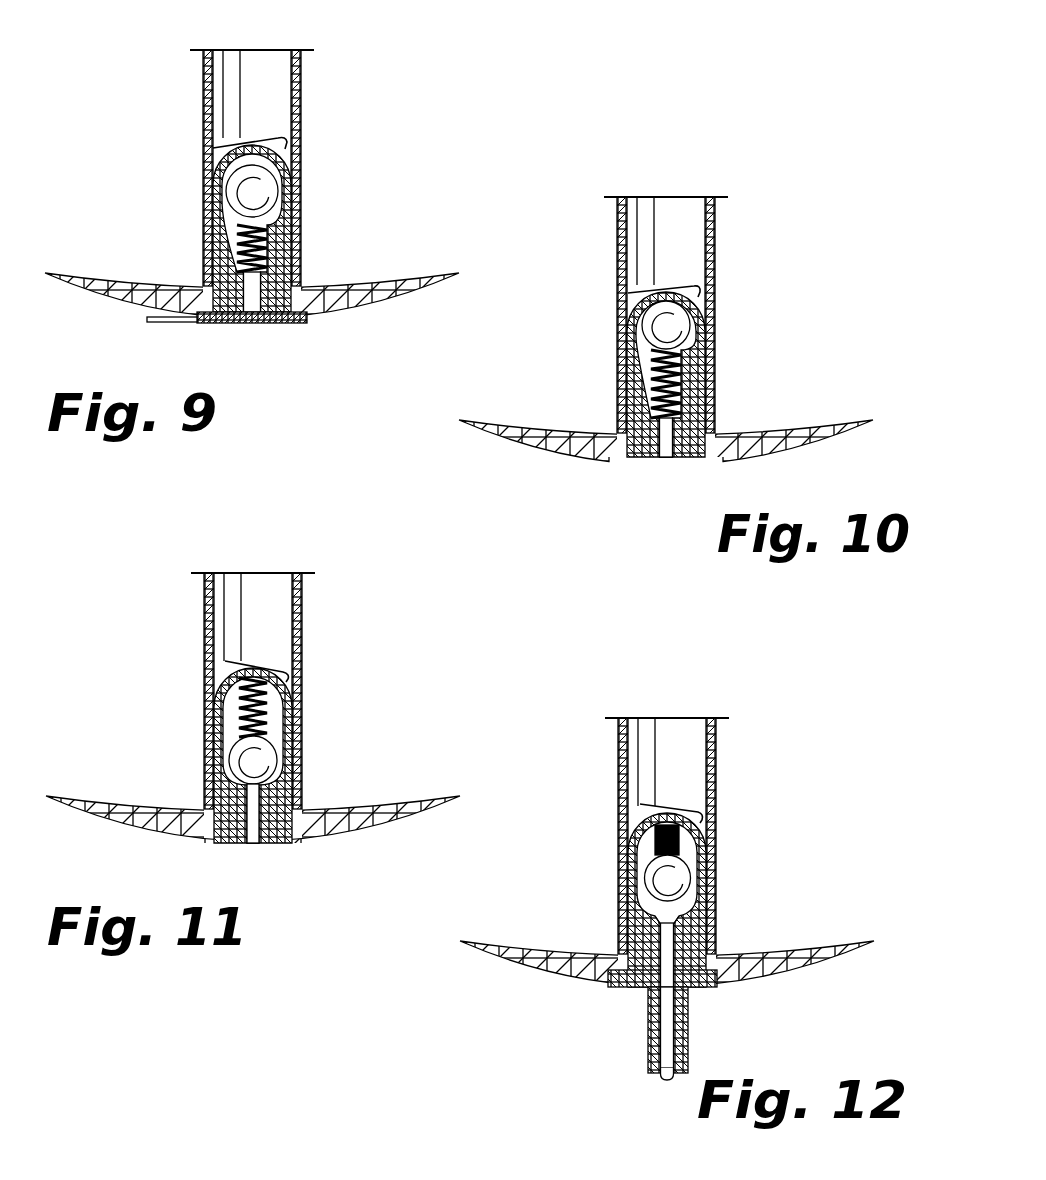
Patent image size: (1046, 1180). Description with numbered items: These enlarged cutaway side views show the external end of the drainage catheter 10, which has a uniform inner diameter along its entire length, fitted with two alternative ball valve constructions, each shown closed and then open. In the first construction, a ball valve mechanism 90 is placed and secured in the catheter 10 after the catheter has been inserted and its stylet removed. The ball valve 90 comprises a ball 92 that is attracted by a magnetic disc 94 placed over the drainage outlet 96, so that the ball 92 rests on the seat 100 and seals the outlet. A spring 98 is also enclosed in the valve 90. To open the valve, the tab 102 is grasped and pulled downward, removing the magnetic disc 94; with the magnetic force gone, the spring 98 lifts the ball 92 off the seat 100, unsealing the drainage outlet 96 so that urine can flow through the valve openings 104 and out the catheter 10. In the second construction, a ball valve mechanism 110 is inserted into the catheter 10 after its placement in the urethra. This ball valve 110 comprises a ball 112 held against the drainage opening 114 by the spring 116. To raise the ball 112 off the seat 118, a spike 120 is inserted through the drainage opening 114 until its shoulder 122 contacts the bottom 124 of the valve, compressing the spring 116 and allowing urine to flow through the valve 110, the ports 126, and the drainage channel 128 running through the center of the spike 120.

In FIG. 9, the catheter 10 is at (64, 48).
In FIG. 10, the catheter 10 is at (666, 323).
In FIG. 9, the ball valve mechanism 90 is at (226, 228).
In FIG. 10, the ball valve mechanism 90 is at (640, 374).
In FIG. 9, the ball 92 is at (300, 180).
In FIG. 10, the ball 92 is at (714, 310).
In FIG. 9, the magnetic disc 94 is at (219, 341).
In FIG. 9, the drainage outlet 96 is at (256, 326).
In FIG. 10, the drainage outlet 96 is at (642, 474).
In FIG. 9, the spring 98 is at (308, 239).
In FIG. 10, the spring 98 is at (719, 384).
In FIG. 9, the seat 100 is at (213, 233).
In FIG. 10, the seat 100 is at (627, 379).
In FIG. 9, the tab 102 is at (149, 332).
In FIG. 9, the valve openings 104 is at (198, 156).
In FIG. 10, the valve openings 104 is at (630, 272).
In FIG. 11, the valve openings 104 is at (218, 648).
In FIG. 12, the valve openings 104 is at (634, 793).
In FIG. 11, the ball valve mechanism 110 is at (253, 700).
In FIG. 12, the ball valve mechanism 110 is at (667, 842).
In FIG. 11, the ball 112 is at (205, 760).
In FIG. 12, the ball 112 is at (732, 872).
In FIG. 11, the drainage opening 114 is at (300, 849).
In FIG. 12, the drainage opening 114 is at (617, 975).
In FIG. 11, the spring 116 is at (190, 707).
In FIG. 12, the spring 116 is at (606, 836).
In FIG. 11, the seat 118 is at (300, 755).
In FIG. 12, the seat 118 is at (620, 906).
In FIG. 12, the spike 120 is at (724, 1030).
In FIG. 12, the shoulder 122 is at (629, 1027).
In FIG. 12, the bottom 124 is at (709, 900).
In FIG. 12, the ports 126 is at (724, 904).
In FIG. 12, the drainage channel 128 is at (621, 1070).